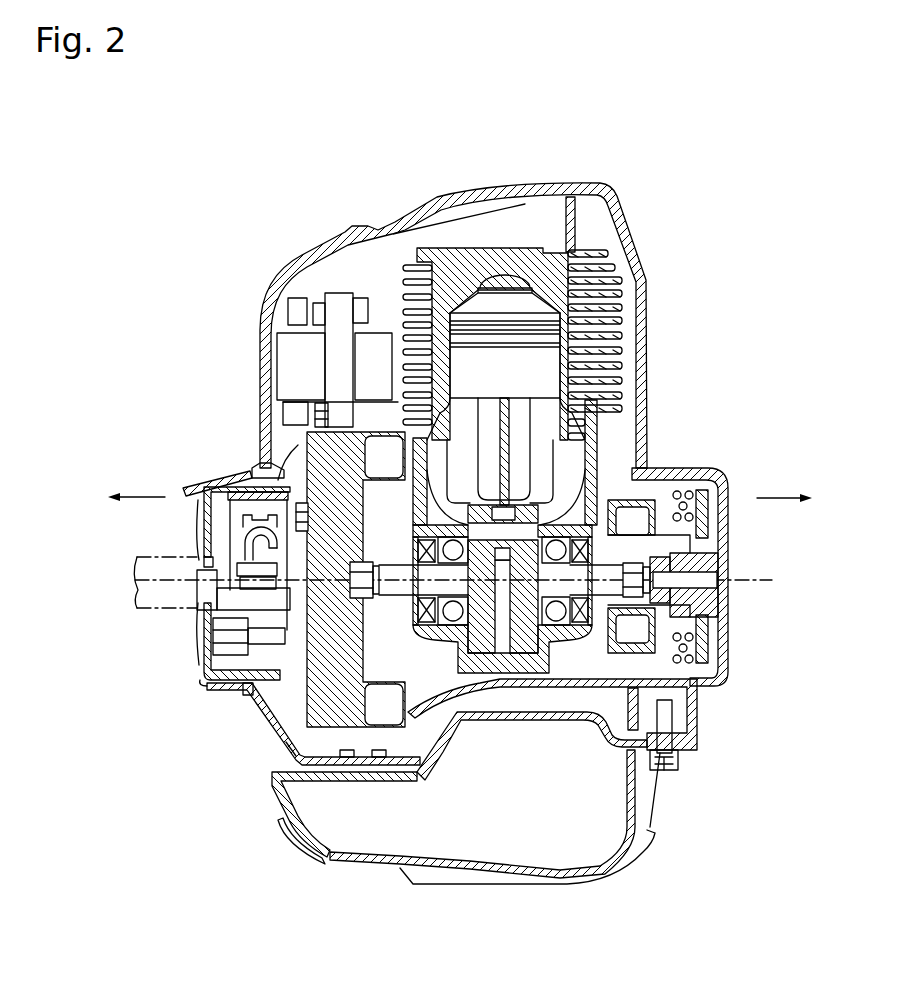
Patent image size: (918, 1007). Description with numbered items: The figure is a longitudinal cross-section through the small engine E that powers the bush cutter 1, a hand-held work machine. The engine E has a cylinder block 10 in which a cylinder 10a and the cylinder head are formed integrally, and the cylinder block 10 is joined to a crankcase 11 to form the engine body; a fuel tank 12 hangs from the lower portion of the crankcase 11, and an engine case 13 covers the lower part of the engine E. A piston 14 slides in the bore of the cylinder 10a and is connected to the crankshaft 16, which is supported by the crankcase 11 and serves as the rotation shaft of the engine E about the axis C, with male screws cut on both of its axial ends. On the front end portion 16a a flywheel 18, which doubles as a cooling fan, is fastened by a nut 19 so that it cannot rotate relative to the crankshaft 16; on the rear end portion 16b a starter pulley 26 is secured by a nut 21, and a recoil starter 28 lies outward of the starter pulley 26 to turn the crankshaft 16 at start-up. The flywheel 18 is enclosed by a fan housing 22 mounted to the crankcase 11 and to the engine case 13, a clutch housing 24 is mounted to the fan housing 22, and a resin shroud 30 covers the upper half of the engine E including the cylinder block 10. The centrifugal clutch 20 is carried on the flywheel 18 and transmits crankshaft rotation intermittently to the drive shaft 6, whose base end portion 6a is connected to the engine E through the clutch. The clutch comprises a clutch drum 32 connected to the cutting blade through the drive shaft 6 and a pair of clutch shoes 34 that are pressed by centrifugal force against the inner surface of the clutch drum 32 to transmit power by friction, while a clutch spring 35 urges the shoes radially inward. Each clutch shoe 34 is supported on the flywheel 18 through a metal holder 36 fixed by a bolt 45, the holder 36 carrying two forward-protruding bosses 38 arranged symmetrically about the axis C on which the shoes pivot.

The bush cutter 1 is at (231, 245).
The engine E is at (312, 230).
The shroud 30 is at (425, 200).
The cylinder block 10 is at (530, 233).
The cylinder 10a is at (445, 300).
The piston 14 is at (568, 358).
The bolt 45 is at (300, 502).
The clutch housing 24 is at (195, 487).
The clutch drum 32 is at (240, 492).
The centrifugal clutch 20 is at (225, 512).
The clutch spring 35 is at (248, 552).
The holder 36 is at (322, 515).
The starter pulley 26 is at (640, 500).
The recoil starter 28 is at (728, 540).
The rotation axis C is at (770, 580).
The other end portion of the crankshaft 16b is at (716, 590).
The base end portion of the drive shaft 6a is at (200, 595).
The drive shaft 6 is at (157, 612).
The nut 19 is at (362, 598).
The crankshaft 16 is at (402, 600).
The clutch shoe 34 is at (250, 652).
The fan housing 22 is at (277, 722).
The boss 38 is at (287, 750).
The nut 21 is at (712, 665).
The crankcase 11 is at (520, 692).
The engine case 13 is at (552, 690).
The fuel tank 12 is at (640, 814).
The flywheel 18 is at (284, 820).
The one end portion of the crankshaft 16a is at (340, 722).